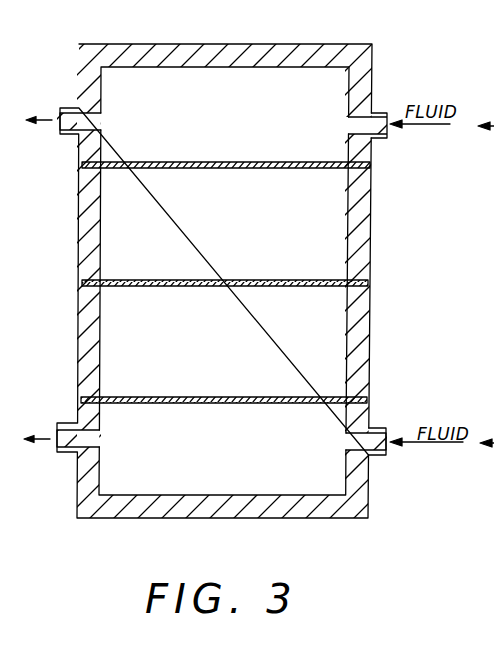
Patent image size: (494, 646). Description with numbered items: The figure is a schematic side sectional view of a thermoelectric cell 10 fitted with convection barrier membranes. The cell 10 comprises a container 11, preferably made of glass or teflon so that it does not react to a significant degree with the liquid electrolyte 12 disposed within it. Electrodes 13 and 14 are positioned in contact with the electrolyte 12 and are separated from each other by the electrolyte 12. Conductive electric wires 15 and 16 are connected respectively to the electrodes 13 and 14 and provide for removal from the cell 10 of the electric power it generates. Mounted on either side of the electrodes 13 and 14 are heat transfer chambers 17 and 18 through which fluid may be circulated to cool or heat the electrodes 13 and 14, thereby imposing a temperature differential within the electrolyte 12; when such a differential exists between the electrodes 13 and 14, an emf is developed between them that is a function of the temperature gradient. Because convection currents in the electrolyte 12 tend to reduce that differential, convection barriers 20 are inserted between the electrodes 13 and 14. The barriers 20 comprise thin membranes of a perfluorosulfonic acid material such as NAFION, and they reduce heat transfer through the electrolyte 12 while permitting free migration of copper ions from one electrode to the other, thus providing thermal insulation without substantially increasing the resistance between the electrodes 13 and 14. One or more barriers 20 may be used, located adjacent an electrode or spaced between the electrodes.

The cell 10 is at (247, 323).
The container 11 is at (365, 233).
The liquid electrolyte 12 is at (222, 233).
The electrode 13 is at (330, 162).
The electrode 14 is at (371, 418).
The conductive electric wire 15 is at (373, 167).
The conductive electric wire 16 is at (372, 402).
The heat transfer chamber 17 is at (289, 52).
The heat transfer chamber 18 is at (352, 511).
The convection barriers 20 is at (330, 274).